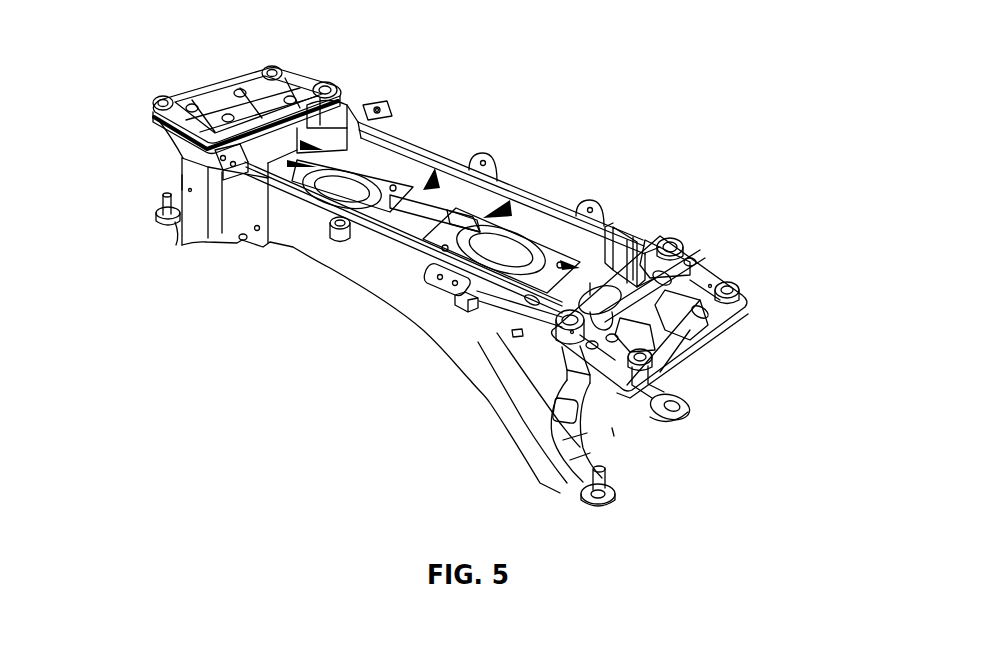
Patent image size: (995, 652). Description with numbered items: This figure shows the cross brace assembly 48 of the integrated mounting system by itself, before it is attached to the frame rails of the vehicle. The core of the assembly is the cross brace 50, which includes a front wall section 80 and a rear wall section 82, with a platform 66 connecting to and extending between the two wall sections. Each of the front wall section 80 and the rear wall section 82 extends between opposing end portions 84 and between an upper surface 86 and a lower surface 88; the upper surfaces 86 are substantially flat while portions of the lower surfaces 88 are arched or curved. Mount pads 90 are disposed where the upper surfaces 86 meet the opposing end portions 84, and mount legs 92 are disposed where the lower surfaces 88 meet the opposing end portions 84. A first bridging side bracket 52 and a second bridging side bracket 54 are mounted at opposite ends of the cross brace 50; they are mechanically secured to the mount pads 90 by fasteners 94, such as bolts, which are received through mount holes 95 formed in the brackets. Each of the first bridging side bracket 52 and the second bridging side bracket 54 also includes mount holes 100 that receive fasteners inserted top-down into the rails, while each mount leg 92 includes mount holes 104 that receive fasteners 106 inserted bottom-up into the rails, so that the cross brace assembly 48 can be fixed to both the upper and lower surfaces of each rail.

The cross brace assembly 48 is at (568, 183).
The cross brace 50 is at (650, 226).
The first bridging side bracket 52 is at (211, 80).
The second bridging side bracket 54 is at (748, 312).
The platform 66 is at (592, 265).
The front wall section 80 is at (353, 250).
The rear wall section 82 is at (528, 189).
The opposing end portions 84 is at (166, 183).
The upper surface 86 is at (427, 235).
The lower surface 88 is at (553, 453).
The mount pads 90 is at (366, 112).
The mount legs 92 is at (172, 224).
The fasteners 94 is at (323, 84).
The mount holes 95 is at (255, 128).
The mount holes 100 is at (268, 70).
The mount holes 104 is at (166, 212).
The fasteners 106 is at (586, 490).